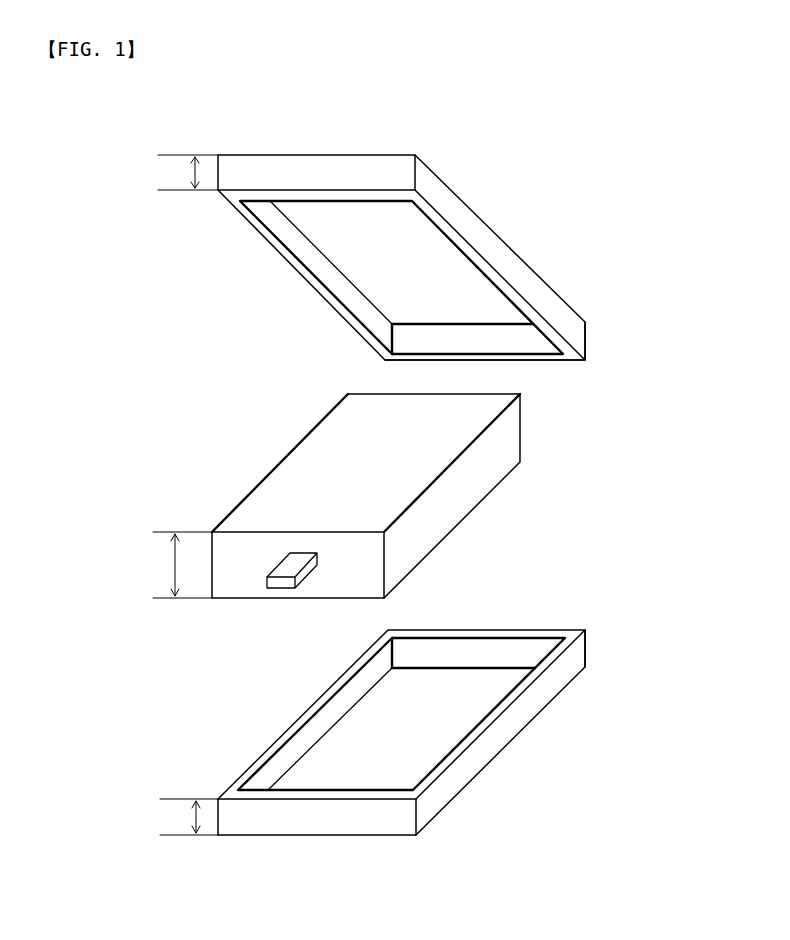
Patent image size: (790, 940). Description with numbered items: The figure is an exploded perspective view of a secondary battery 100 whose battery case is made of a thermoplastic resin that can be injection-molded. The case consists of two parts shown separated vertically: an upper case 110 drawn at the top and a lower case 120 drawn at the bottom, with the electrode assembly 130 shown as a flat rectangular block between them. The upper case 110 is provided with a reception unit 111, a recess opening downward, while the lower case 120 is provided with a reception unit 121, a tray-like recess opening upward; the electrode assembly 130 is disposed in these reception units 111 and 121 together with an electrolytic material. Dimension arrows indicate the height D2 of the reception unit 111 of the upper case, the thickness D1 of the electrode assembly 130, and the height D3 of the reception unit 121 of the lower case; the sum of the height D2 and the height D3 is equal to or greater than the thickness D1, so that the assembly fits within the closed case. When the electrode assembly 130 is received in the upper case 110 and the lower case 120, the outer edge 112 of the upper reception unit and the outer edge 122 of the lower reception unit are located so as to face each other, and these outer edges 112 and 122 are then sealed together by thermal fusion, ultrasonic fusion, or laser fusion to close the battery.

The secondary battery 100 is at (110, 139).
The upper case 110 is at (510, 252).
The reception unit 111 is at (347, 253).
The outer edge 112 is at (585, 361).
The lower case 120 is at (530, 723).
The reception unit 121 is at (347, 737).
The outer edge 122 is at (570, 632).
The electrode assembly 130 is at (520, 438).
The thickness of the electrode assembly D1 is at (173, 565).
The height of the reception unit of the upper case D2 is at (180, 172).
The height of the reception unit of the lower case D3 is at (186, 817).